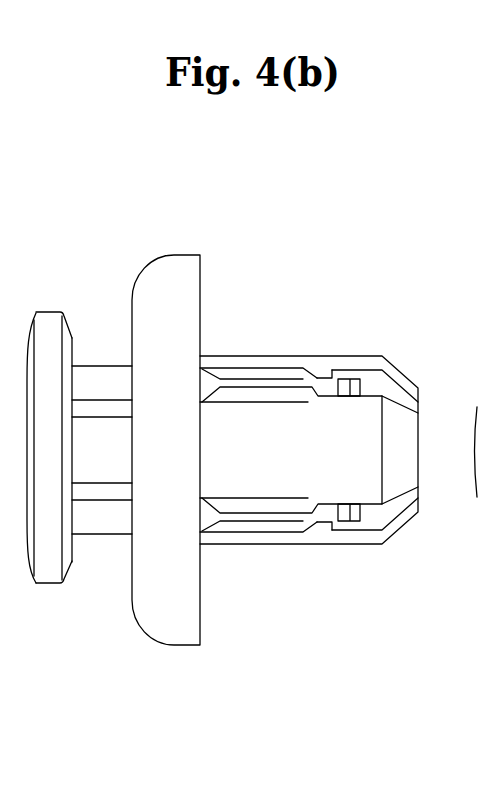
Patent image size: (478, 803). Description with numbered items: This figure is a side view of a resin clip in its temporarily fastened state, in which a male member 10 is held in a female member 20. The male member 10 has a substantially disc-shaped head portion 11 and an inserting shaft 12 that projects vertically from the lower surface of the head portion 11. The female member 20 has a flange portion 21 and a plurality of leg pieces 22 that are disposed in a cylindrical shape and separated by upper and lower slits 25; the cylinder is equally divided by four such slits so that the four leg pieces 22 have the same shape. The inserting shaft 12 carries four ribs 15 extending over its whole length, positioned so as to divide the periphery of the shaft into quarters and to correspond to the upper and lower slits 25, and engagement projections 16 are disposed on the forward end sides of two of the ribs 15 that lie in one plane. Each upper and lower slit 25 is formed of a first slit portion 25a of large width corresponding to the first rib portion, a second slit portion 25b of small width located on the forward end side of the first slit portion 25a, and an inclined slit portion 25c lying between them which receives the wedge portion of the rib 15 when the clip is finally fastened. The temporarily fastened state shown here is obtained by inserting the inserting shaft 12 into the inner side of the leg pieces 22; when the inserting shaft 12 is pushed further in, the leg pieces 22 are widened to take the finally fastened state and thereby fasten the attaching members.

The male member 10 is at (90, 125).
The head portion 11 is at (51, 300).
The inserting shaft 12 is at (99, 352).
The rib 15 is at (231, 378).
The engagement projection 16 is at (358, 380).
The female member 20 is at (292, 673).
The flange portion 21 is at (210, 632).
The leg piece 22 is at (247, 558).
The upper and lower slit 25 is at (467, 205).
The first slit portion 25a is at (258, 372).
The second slit portion 25b is at (334, 376).
The inclined slit portion 25c is at (326, 378).